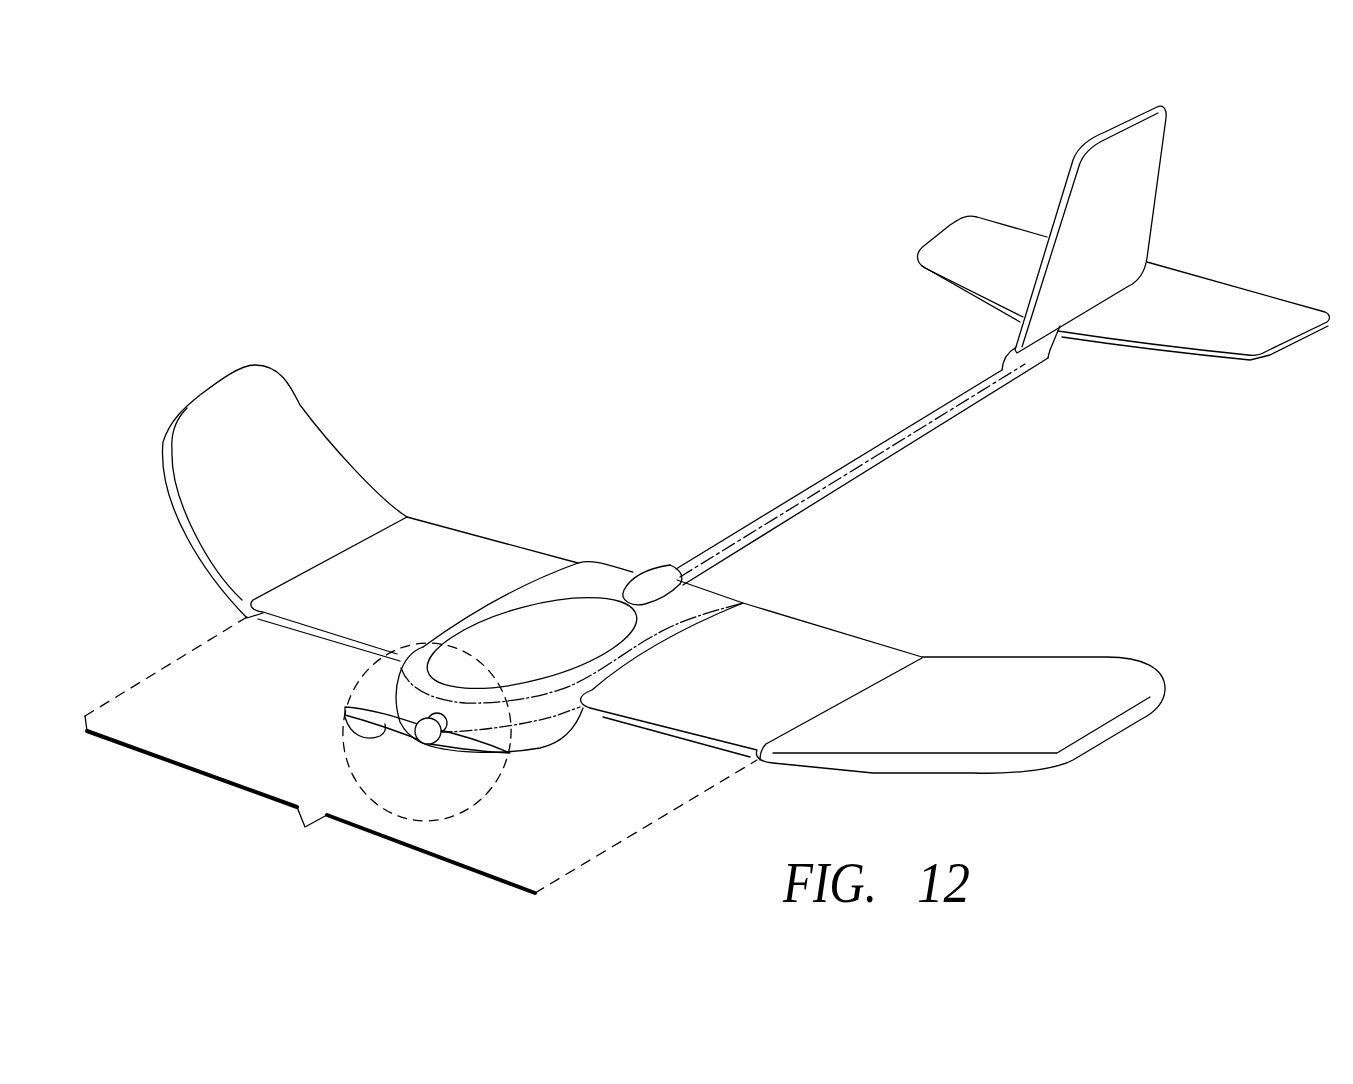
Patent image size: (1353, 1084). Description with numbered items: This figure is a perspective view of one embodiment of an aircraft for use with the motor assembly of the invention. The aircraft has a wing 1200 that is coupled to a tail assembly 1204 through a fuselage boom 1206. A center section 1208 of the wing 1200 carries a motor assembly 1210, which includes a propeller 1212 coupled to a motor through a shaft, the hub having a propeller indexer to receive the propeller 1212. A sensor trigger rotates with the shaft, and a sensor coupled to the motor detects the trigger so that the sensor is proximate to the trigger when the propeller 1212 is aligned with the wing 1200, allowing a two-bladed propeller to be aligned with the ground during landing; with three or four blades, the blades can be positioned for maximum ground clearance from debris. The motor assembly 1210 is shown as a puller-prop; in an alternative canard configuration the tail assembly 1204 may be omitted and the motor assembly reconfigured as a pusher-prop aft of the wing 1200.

The wing 1200 is at (620, 718).
The tail assembly 1204 is at (1193, 224).
The fuselage boom 1206 is at (835, 473).
The center section 1208 is at (307, 825).
The motor assembly 1210 is at (541, 609).
The propeller 1212 is at (347, 728).